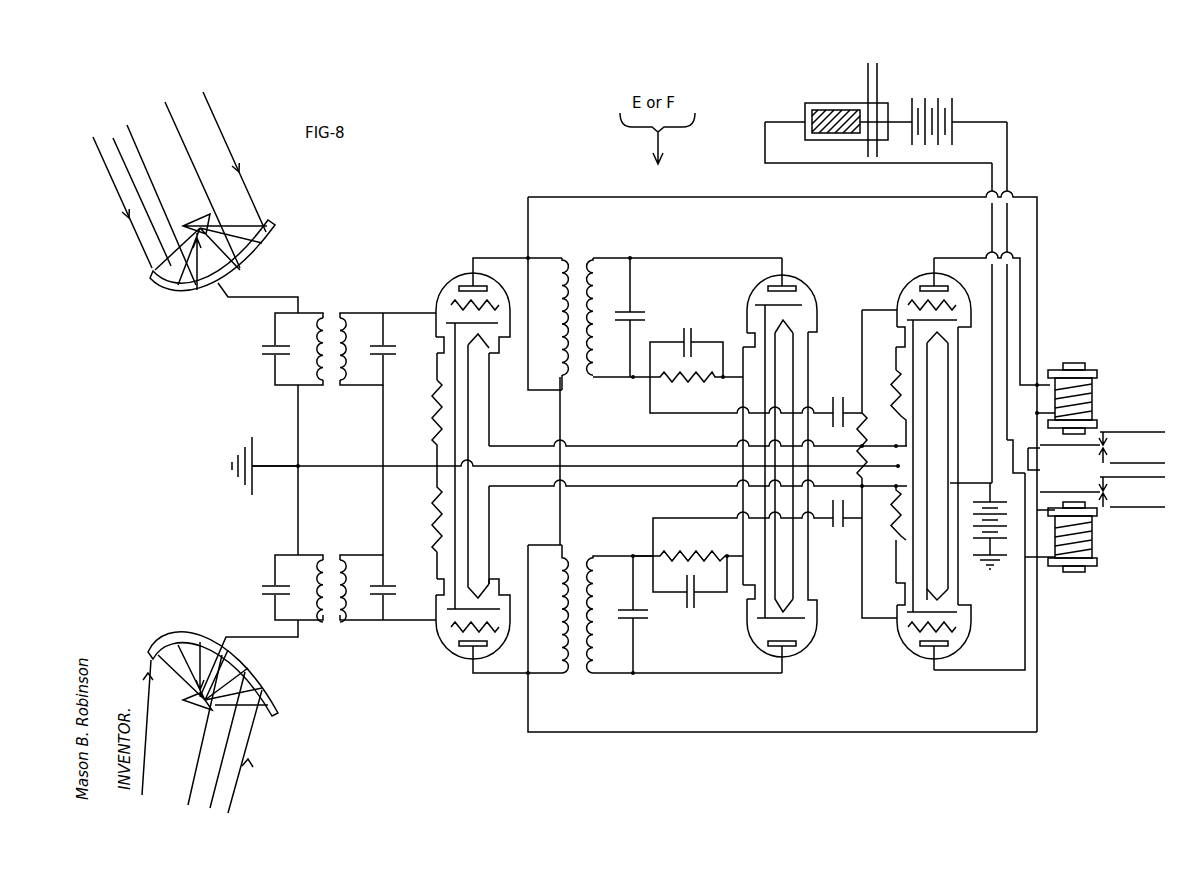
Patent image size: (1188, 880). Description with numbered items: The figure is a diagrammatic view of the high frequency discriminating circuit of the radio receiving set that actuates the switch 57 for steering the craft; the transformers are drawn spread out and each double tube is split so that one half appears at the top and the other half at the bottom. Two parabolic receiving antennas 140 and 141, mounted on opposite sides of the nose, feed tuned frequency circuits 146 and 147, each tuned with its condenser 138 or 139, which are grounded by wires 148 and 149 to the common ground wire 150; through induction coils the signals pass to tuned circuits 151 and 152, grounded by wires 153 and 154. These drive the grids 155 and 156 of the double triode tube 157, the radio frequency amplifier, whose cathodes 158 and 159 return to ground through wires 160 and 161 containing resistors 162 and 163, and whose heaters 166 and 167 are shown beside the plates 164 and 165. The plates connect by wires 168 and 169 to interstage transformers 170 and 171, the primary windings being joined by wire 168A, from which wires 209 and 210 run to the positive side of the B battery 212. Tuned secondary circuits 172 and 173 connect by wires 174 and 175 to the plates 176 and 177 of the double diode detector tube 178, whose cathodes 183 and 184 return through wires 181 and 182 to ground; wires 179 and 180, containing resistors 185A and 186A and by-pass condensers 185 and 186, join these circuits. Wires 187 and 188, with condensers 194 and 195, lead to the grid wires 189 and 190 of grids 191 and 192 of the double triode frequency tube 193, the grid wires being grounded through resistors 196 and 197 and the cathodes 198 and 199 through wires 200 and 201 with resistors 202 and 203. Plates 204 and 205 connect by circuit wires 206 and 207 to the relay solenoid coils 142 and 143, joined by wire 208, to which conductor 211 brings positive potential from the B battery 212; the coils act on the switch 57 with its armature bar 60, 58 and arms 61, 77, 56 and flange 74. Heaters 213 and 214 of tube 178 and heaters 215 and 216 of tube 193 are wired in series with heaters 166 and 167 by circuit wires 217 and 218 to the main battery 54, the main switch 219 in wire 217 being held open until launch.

The main battery 54 is at (945, 97).
The armature arm 56 is at (1110, 490).
The switch 57 is at (1085, 465).
The armature bar 58 is at (1055, 491).
The armature bar 60 is at (1077, 447).
The armature arm 61 is at (1105, 440).
The coil flange 74 is at (1086, 560).
The armature arm 77 is at (1110, 450).
The tuning condenser 138 is at (335, 317).
The tuning condenser 139 is at (330, 557).
The parabolic receiving antenna 140 is at (263, 247).
The parabolic receiving antenna 141 is at (273, 687).
The solenoid coil 142 is at (1077, 362).
The solenoid coil 143 is at (1077, 574).
The tuned frequency circuit 146 is at (308, 313).
The tuned frequency circuit 147 is at (307, 612).
The wire 148 is at (298, 409).
The wire 149 is at (298, 510).
The common ground wire 150 is at (525, 472).
The tuned circuit 151 is at (358, 313).
The tuned circuit 152 is at (363, 613).
The wire 153 is at (383, 432).
The wire 154 is at (383, 510).
The grid 155 is at (457, 300).
The grid 156 is at (463, 627).
The double triode tube 157 is at (495, 428).
The cathode 158 is at (452, 317).
The cathode 159 is at (452, 620).
The wire 160 is at (437, 360).
The wire 161 is at (437, 560).
The resistor 162 is at (437, 402).
The resistor 163 is at (433, 507).
The plate 164 is at (462, 288).
The plate 165 is at (480, 646).
The heater 166 is at (480, 350).
The heater 167 is at (482, 575).
The wire 168 is at (538, 258).
The wire 168A is at (562, 418).
The wire 169 is at (545, 675).
The interstage transformer 170 is at (577, 258).
The interstage transformer 171 is at (600, 675).
The tuned secondary output circuit 172 is at (613, 270).
The tuned secondary output circuit 173 is at (622, 673).
The wire 174 is at (695, 256).
The wire 175 is at (705, 677).
The plate 176 is at (785, 287).
The plate 177 is at (787, 646).
The double diode detector tube 178 is at (802, 348).
The wire 179 is at (638, 382).
The wire 180 is at (643, 553).
The wire 181 is at (742, 353).
The wire 182 is at (740, 575).
The cathode 183 is at (763, 303).
The cathode 184 is at (765, 620).
The by-pass condenser 185 is at (680, 335).
The resistor 185A is at (707, 378).
The by-pass condenser 186 is at (687, 597).
The resistor 186A is at (692, 554).
The wire 187 is at (678, 414).
The wire 188 is at (697, 515).
The wire 189 is at (878, 308).
The wire 190 is at (872, 620).
The grid 191 is at (915, 297).
The grid 192 is at (912, 645).
The double triode frequency tube 193 is at (955, 298).
The condenser 194 is at (827, 403).
The condenser 195 is at (842, 529).
The resistor 196 is at (895, 357).
The resistor 197 is at (828, 520).
The cathode 198 is at (917, 298).
The cathode 199 is at (925, 622).
The wire 200 is at (868, 334).
The wire 201 is at (895, 575).
The resistor 202 is at (893, 405).
The resistor 203 is at (895, 527).
The plate 204 is at (925, 286).
The plate 205 is at (940, 647).
The circuit wire 206 is at (975, 255).
The circuit wire 207 is at (987, 672).
The wire 208 is at (1020, 433).
The wire 209 is at (1037, 197).
The wire 210 is at (1040, 715).
The conductor 211 is at (1013, 460).
The B battery 212 is at (978, 366).
The heater 213 is at (788, 332).
The heater 214 is at (792, 588).
The heater 215 is at (937, 340).
The heater 216 is at (940, 573).
The circuit wire 217 is at (588, 446).
The circuit wire 218 is at (588, 490).
The main switch 219 is at (833, 105).